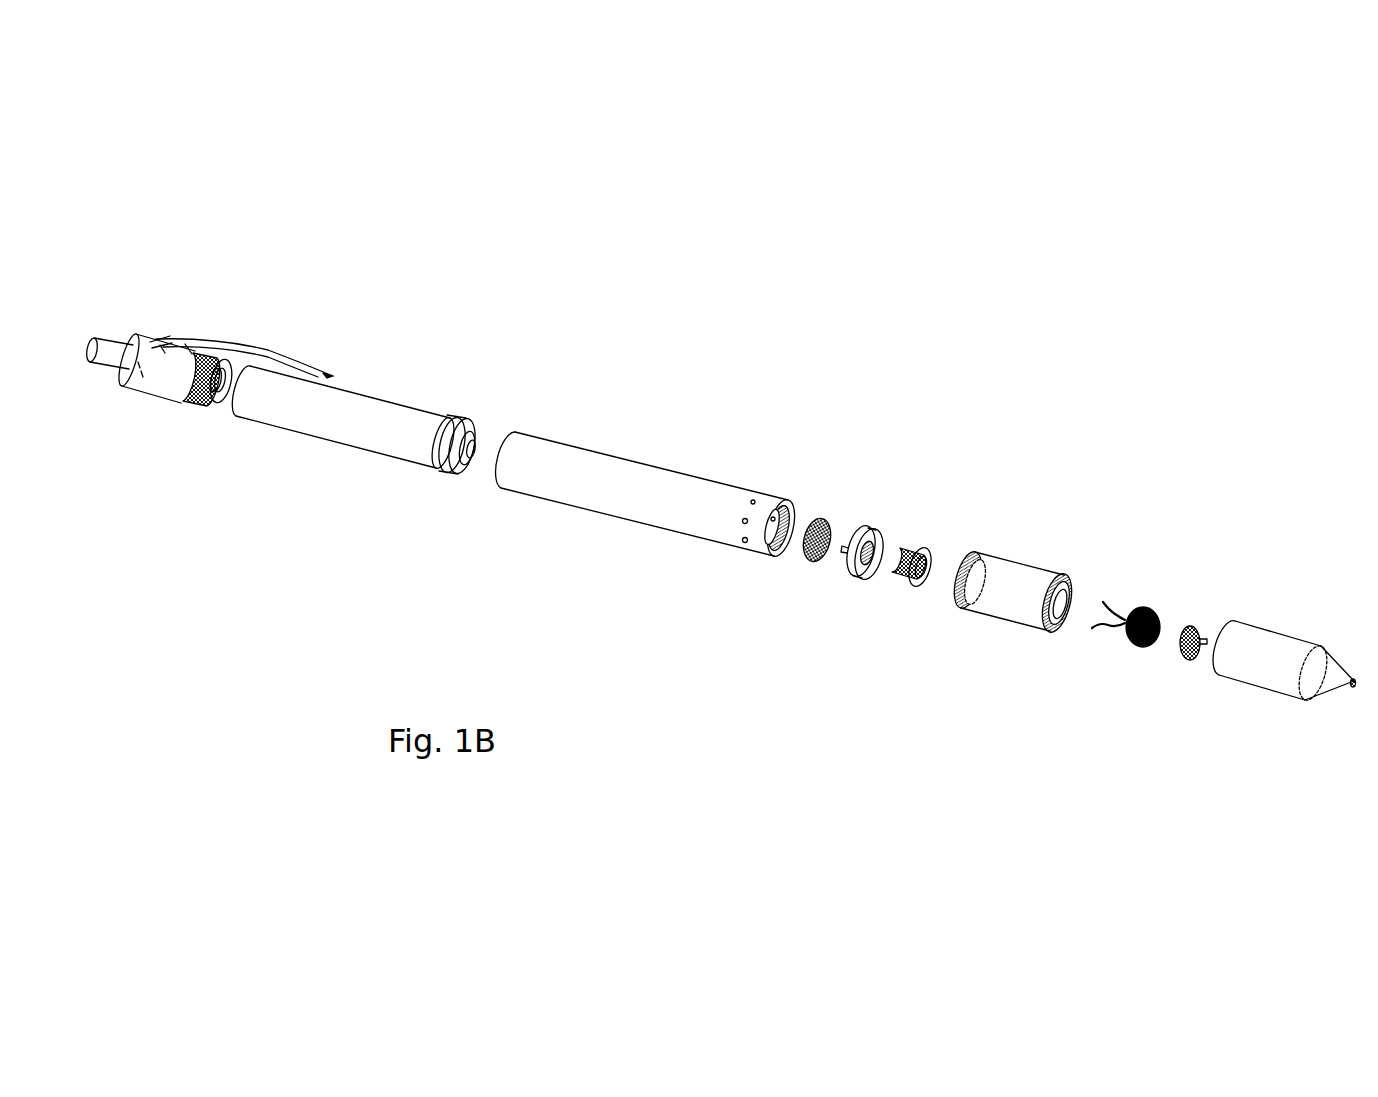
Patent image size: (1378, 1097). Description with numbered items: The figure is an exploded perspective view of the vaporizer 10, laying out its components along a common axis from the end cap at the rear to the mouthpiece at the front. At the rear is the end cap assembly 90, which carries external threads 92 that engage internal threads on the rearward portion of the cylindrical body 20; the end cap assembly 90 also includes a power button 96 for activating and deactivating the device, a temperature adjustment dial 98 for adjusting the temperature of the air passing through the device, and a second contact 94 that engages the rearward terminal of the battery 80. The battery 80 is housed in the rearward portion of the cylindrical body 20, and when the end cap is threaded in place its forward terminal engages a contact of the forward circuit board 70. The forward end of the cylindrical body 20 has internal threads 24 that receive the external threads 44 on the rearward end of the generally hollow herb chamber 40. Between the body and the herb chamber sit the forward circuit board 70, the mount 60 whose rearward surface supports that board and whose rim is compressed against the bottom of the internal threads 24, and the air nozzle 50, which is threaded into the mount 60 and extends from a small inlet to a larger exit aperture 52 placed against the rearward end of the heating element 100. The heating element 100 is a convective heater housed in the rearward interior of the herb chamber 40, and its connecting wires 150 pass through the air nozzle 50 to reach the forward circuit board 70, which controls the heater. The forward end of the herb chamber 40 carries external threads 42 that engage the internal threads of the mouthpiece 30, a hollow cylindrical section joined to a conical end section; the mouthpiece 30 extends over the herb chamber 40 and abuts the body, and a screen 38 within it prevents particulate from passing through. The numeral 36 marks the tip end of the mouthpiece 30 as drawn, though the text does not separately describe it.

The vaporizer 10 is at (799, 340).
The cylindrical body 20 is at (673, 483).
The internal threads 24 is at (780, 547).
The mouthpiece 30 is at (1268, 627).
The tip 36 is at (1353, 690).
The screen 38 is at (1192, 630).
The herb chamber 40 is at (1018, 577).
The external threads 42 is at (1055, 585).
The external threads 44 is at (972, 560).
The air nozzle 50 is at (905, 550).
The exit aperture 52 is at (918, 583).
The mount 60 is at (858, 532).
The forward circuit board 70 is at (816, 520).
The battery 80 is at (380, 407).
The end cap assembly 90 is at (161, 301).
The external threads 92 is at (198, 407).
The second contact 94 is at (219, 388).
The power button 96 is at (107, 347).
The temperature adjustment dial 98 is at (145, 383).
The heating element 100 is at (1138, 650).
The connecting wires 150 is at (1110, 603).